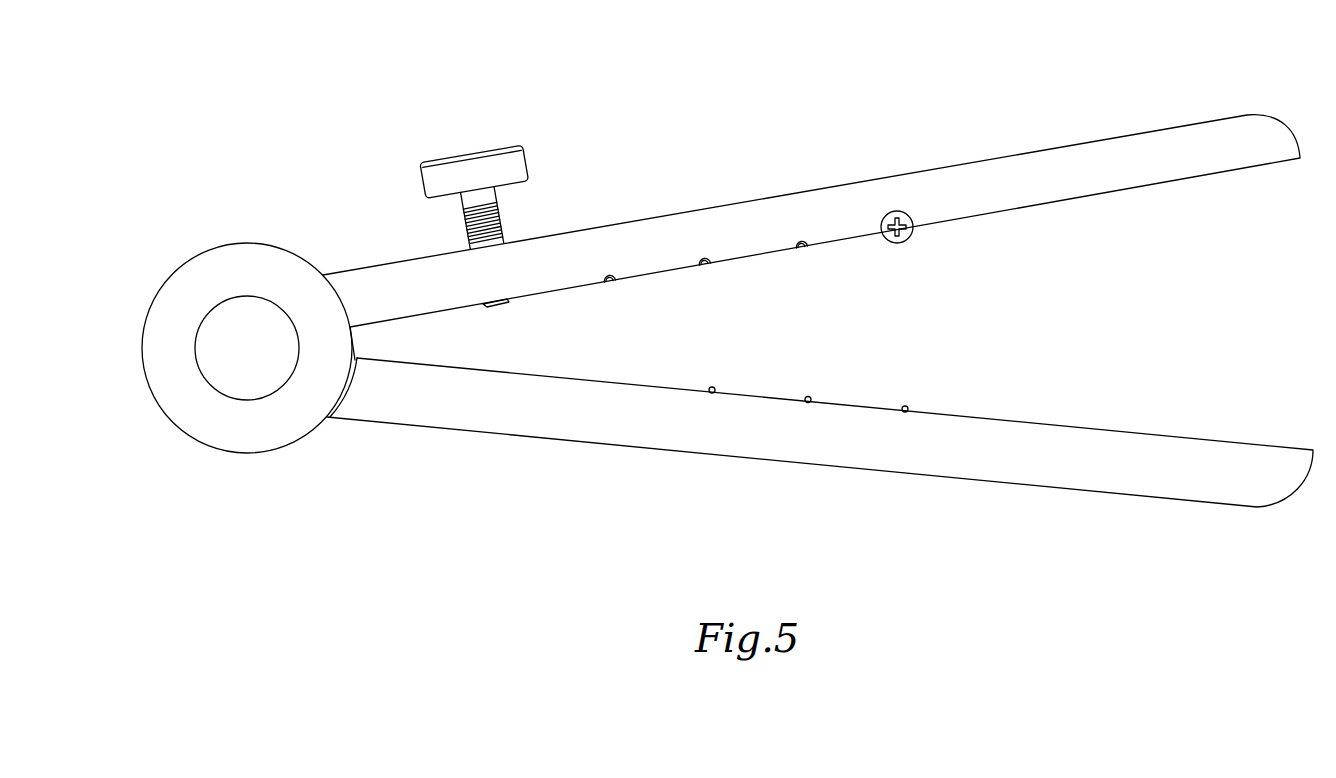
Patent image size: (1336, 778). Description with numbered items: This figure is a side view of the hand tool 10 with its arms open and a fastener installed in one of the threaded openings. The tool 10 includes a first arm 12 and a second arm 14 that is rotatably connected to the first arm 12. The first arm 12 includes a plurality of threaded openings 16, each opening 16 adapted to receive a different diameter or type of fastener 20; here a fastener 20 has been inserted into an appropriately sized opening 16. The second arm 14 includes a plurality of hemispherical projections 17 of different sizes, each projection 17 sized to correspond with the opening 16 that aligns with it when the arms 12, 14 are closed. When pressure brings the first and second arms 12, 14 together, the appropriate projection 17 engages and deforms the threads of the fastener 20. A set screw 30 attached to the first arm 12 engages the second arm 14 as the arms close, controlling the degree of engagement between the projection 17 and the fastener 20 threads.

The tool 10 is at (242, 80).
The first arm 12 is at (1106, 148).
The second arm 14 is at (1108, 487).
The opening 16 is at (800, 241).
The projection 17 is at (905, 408).
The fastener 20 is at (895, 211).
The set screw 30 is at (470, 163).